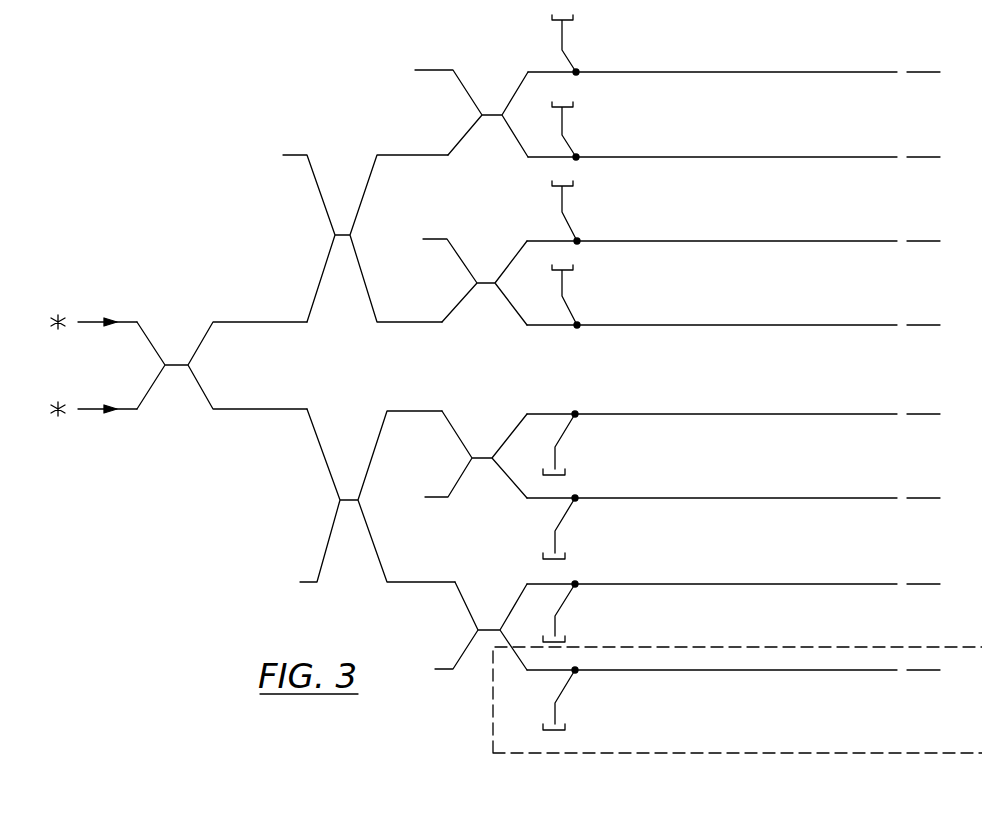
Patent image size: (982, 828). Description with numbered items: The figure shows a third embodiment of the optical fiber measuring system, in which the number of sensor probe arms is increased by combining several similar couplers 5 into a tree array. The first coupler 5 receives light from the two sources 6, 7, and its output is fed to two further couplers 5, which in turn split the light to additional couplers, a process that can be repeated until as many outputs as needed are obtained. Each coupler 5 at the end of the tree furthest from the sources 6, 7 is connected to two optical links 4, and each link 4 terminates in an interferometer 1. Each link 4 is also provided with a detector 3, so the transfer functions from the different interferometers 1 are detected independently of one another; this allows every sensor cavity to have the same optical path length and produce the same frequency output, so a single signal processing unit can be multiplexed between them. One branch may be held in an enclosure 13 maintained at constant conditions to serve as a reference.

The interferometer 1 is at (916, 76).
The detector 3 is at (552, 20).
The optical link 4 is at (738, 70).
The coupler 5 is at (177, 361).
The source 6 is at (94, 336).
The source 7 is at (94, 423).
The enclosure 13 is at (640, 744).